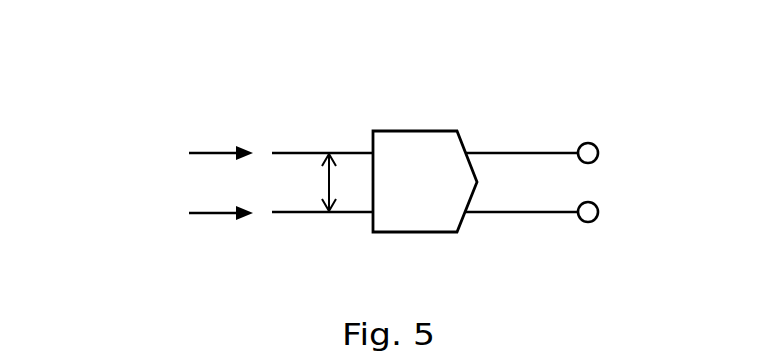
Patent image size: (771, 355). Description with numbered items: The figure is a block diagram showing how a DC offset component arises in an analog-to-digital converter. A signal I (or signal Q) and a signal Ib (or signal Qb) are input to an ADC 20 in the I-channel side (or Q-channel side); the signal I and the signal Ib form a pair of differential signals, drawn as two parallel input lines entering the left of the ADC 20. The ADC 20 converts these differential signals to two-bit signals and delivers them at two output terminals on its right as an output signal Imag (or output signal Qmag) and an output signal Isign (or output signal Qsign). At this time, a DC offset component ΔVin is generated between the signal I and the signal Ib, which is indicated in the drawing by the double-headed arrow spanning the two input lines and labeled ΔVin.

The ADC 20 is at (425, 131).
The signal I is at (281, 139).
The signal Ib is at (281, 225).
The DC offset component Δ Vin is at (175, 182).
The output signal Imag is at (588, 151).
The output signal Isign is at (599, 210).